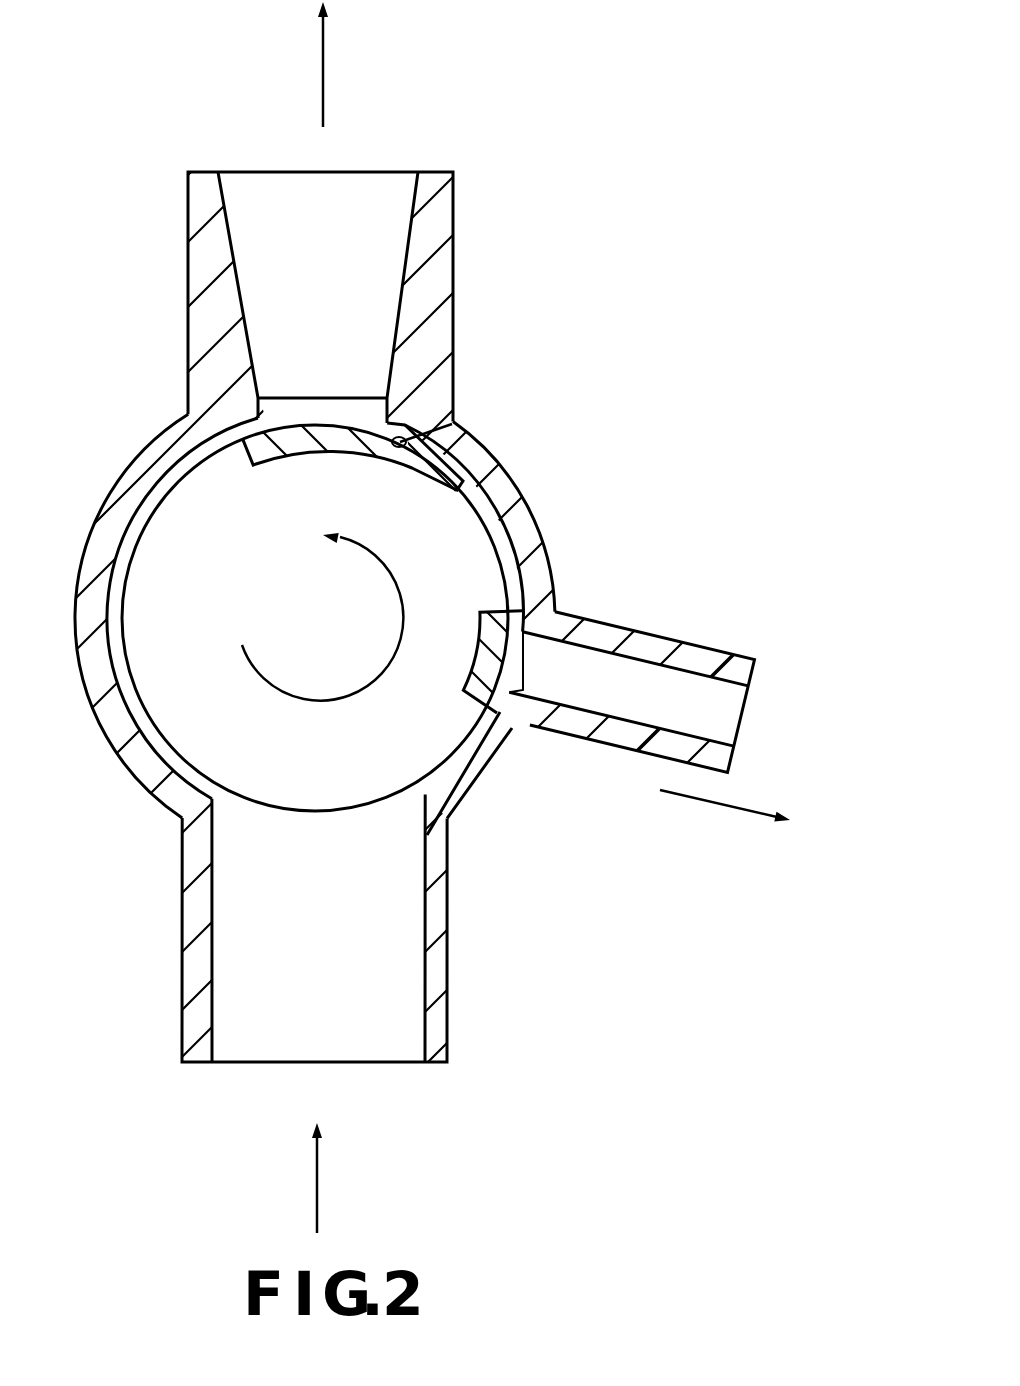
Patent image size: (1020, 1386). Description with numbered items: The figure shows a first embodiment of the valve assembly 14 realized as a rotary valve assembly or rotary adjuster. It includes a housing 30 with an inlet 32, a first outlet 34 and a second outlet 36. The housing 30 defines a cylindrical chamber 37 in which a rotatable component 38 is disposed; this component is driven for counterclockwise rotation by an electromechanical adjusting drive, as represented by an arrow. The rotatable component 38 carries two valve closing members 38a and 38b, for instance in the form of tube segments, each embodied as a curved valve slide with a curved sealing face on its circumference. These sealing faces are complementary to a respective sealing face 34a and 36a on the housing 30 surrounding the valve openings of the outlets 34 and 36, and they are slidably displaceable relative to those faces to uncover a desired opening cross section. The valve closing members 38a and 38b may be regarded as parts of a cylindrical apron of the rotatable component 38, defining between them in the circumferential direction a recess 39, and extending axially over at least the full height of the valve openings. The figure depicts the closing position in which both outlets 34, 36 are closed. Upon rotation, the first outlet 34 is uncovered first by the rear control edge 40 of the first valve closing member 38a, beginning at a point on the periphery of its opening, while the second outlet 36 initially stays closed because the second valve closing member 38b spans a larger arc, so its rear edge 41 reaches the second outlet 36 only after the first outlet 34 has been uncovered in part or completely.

The valve assembly 14 is at (116, 810).
The housing 30 is at (548, 534).
The inlet 32 is at (424, 1025).
The first outlet 34 is at (727, 735).
The sealing face 34a is at (490, 705).
The second outlet 36 is at (422, 198).
The sealing face 36a is at (452, 424).
The cylindrical chamber 37 is at (450, 808).
The rotatable component 38 is at (283, 816).
The first valve closing member 38a is at (485, 675).
The second valve closing member 38b is at (412, 468).
The recess 39 is at (483, 533).
The rear control edge 40 is at (472, 720).
The rear edge 41 is at (450, 508).